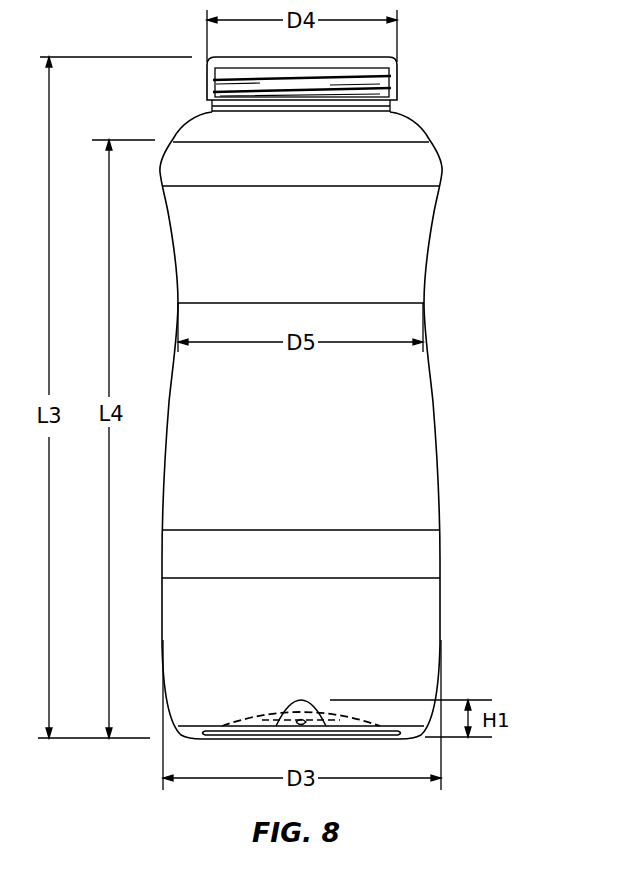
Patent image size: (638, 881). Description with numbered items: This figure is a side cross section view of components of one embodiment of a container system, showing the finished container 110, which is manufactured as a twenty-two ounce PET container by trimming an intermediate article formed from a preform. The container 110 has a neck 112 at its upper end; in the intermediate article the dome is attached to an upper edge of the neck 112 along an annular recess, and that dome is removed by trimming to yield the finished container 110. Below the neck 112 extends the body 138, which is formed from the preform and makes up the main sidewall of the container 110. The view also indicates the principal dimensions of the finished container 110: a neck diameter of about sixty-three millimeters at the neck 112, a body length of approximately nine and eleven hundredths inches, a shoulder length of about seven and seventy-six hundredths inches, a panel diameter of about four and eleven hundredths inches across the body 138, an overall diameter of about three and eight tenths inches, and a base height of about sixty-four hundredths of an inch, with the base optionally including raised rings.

The container 110 is at (580, 103).
The neck 112 is at (396, 74).
The body 138 is at (423, 457).